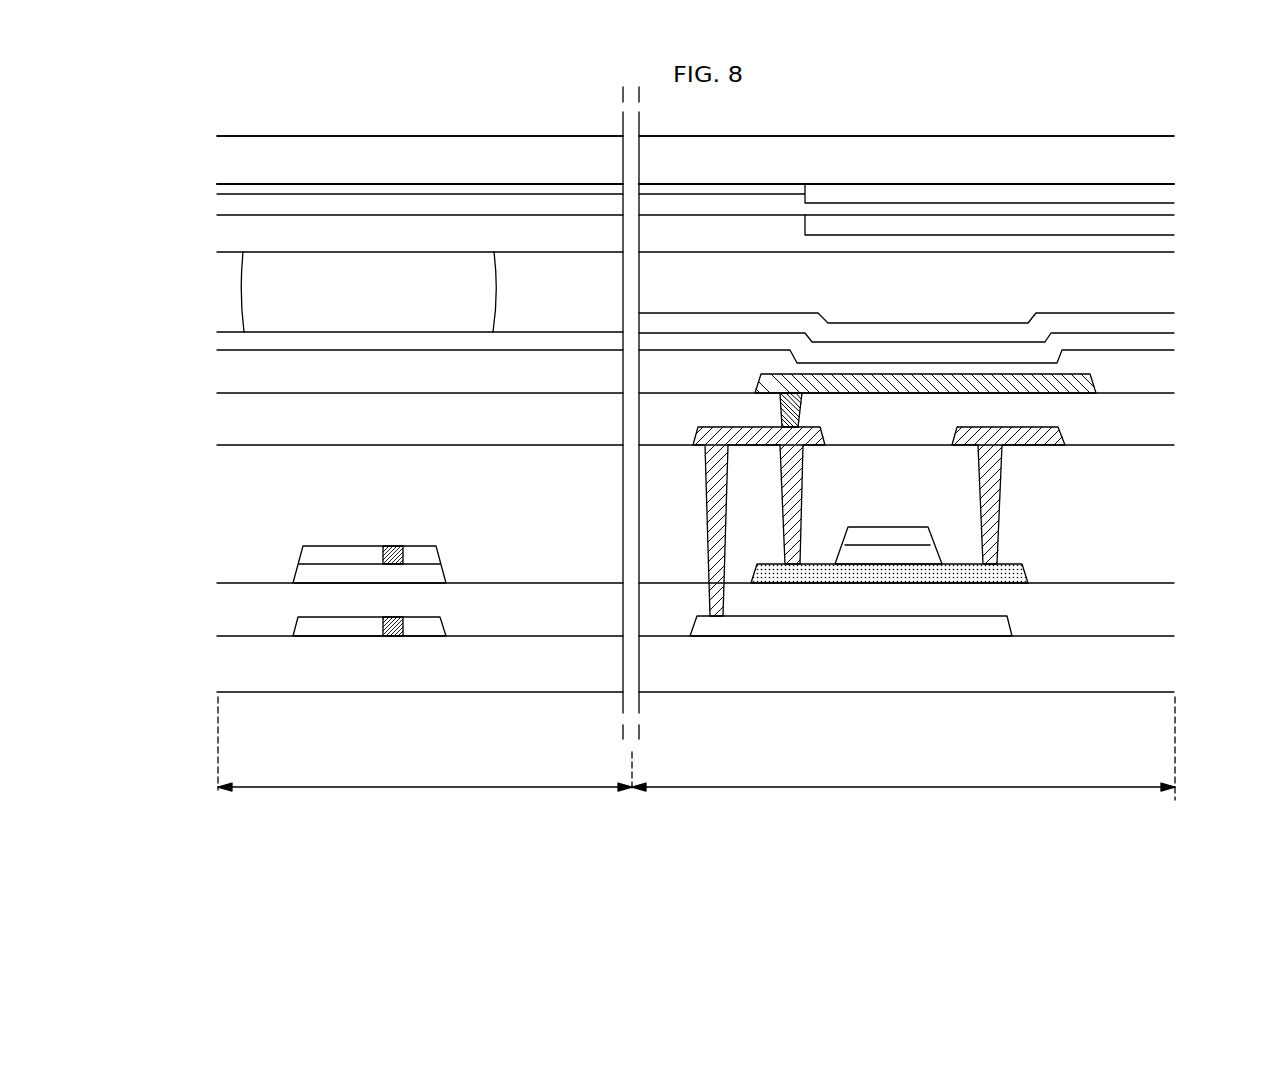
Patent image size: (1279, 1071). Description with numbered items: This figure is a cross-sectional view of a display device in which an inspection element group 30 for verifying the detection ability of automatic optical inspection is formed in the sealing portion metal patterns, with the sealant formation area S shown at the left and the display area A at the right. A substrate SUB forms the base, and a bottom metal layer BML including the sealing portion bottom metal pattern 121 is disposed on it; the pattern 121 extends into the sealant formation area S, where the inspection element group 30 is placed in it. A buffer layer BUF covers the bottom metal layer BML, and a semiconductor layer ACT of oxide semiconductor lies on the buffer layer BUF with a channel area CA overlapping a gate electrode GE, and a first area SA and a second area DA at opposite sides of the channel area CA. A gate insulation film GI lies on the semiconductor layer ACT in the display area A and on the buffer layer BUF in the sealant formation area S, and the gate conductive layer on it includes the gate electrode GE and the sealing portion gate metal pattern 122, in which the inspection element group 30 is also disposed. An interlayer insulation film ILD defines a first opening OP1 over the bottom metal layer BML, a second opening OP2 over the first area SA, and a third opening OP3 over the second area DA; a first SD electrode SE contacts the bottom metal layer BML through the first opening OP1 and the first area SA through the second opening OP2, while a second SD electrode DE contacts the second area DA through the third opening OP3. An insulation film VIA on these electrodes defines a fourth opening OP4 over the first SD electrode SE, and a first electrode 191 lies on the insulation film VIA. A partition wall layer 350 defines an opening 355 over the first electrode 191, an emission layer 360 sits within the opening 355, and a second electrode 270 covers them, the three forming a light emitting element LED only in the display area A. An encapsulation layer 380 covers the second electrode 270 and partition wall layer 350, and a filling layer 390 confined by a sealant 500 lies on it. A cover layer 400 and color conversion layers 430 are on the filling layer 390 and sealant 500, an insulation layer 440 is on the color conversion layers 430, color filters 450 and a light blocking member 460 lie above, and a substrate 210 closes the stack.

The substrate 210 is at (222, 157).
The sealant 500 is at (243, 293).
The light blocking member 460 is at (348, 190).
The insulation layer 440 is at (410, 203).
The color conversion layer 430 is at (1000, 225).
The color filter 450 is at (1053, 195).
The cover layer 400 is at (491, 232).
The filling layer 390 is at (570, 275).
The encapsulation layer 380 is at (222, 340).
The partition wall layer 350 is at (222, 370).
The opening 355 is at (797, 372).
The first SD electrode SE is at (725, 432).
The second SD electrode DE is at (1043, 435).
The fourth opening OP4 is at (787, 420).
The light emitting element LED is at (1020, 287).
The first electrode 191 is at (928, 380).
The emission layer 360 is at (970, 368).
The second electrode 270 is at (1007, 350).
The insulation film VIA is at (222, 418).
The interlayer insulation film ILD is at (222, 503).
The buffer layer BUF is at (222, 607).
The substrate SUB is at (222, 663).
The semiconductor layer ACT is at (833, 747).
The first area SA is at (812, 577).
The channel area CA is at (885, 577).
The second area DA is at (970, 577).
The gate electrode GE is at (885, 535).
The gate insulation film GI is at (920, 555).
The bottom metal layer BML is at (735, 628).
The first opening OP1 is at (721, 614).
The second opening OP2 is at (789, 562).
The third opening OP3 is at (986, 562).
The inspection element group 30 is at (393, 617).
The sealing portion gate metal pattern 122 is at (360, 557).
The sealing portion bottom metal pattern 121 is at (425, 627).
The sealant formation area S is at (425, 756).
The display area A is at (903, 755).